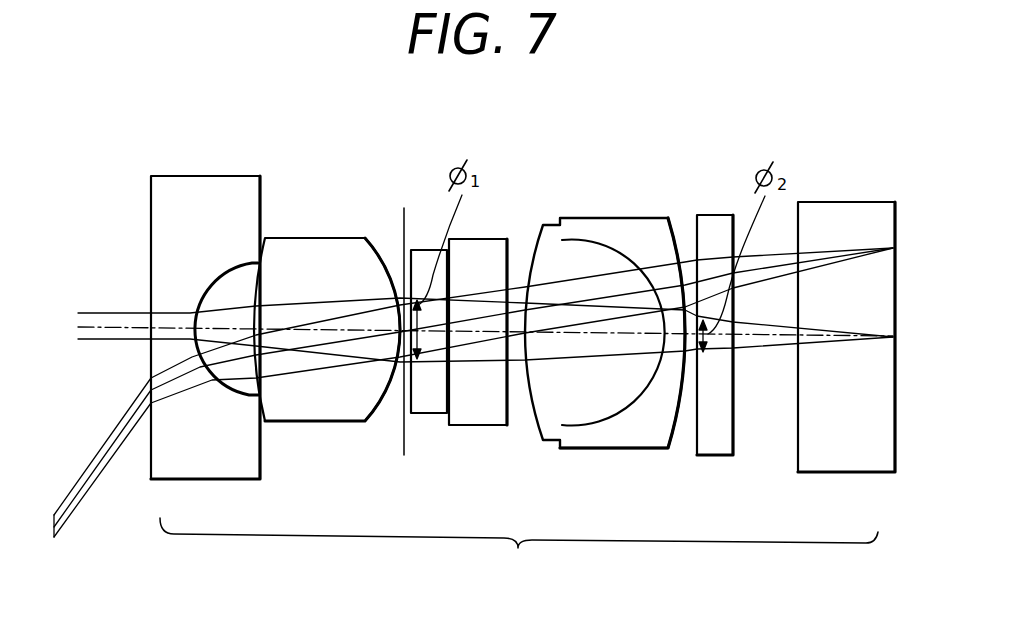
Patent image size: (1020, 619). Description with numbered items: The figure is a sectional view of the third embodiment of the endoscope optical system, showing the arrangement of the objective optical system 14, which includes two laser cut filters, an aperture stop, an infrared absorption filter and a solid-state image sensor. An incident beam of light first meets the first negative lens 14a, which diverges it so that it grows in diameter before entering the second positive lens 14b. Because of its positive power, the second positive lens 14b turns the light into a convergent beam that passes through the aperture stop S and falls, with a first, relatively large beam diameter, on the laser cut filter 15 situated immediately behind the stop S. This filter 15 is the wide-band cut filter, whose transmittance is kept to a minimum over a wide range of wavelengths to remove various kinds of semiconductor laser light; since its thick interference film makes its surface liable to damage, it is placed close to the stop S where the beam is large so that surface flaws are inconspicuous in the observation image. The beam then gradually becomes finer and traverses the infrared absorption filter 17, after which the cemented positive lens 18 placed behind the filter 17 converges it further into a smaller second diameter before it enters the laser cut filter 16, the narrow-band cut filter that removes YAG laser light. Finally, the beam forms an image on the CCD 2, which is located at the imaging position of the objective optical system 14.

The objective optical system 14 is at (519, 552).
The first negative lens 14a is at (202, 182).
The second positive lens 14b is at (317, 240).
The aperture stop S is at (404, 215).
The laser cut filter (wide-band cut filter) 15 is at (432, 417).
The infrared absorption filter 17 is at (480, 428).
The cemented positive lens 18 is at (603, 223).
The laser cut filter (narrow-band cut filter) 16 is at (713, 447).
The solid-state image sensor (CCD) 2 is at (897, 270).